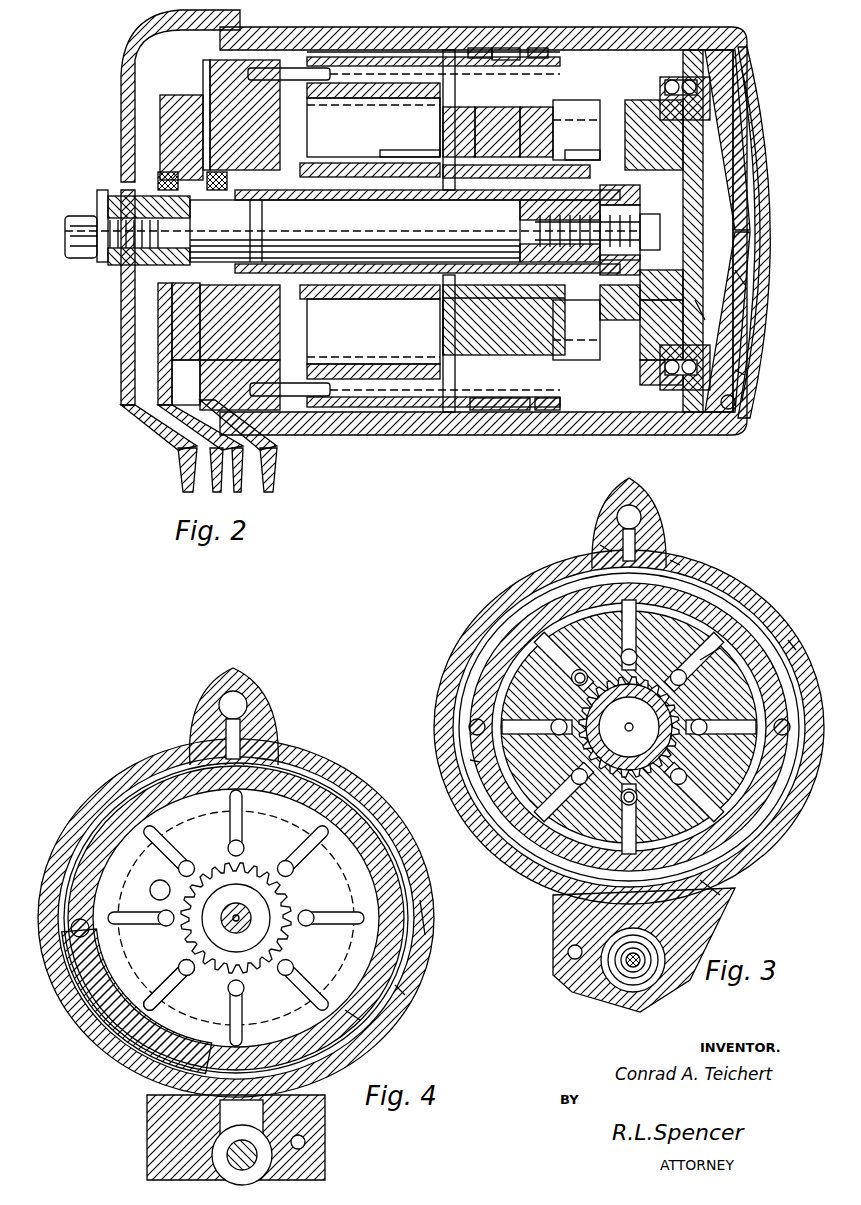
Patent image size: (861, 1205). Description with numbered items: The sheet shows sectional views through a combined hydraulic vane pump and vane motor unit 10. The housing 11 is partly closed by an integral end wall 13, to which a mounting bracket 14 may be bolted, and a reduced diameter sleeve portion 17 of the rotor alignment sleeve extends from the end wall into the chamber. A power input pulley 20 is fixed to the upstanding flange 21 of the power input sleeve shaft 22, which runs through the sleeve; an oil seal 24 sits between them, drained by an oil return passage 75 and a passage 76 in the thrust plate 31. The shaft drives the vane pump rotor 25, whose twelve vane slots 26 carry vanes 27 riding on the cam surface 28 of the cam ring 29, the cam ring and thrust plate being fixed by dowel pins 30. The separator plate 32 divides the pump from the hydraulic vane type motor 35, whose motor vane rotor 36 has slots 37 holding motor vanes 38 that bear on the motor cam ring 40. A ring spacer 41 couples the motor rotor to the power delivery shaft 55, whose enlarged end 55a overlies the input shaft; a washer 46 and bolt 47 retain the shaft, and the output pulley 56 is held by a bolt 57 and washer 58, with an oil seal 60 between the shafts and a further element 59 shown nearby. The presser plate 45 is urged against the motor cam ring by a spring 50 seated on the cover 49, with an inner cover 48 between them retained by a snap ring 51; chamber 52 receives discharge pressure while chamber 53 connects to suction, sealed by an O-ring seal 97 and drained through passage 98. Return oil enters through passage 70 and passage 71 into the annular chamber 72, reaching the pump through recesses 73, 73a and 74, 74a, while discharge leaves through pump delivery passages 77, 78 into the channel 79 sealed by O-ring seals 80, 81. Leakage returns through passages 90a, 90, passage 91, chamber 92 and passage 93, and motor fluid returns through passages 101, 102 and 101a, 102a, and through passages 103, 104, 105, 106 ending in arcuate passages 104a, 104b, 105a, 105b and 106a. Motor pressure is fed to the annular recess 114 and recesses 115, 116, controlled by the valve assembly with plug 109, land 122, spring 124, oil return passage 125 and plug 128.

In FIG. 3, the housing 10 is at (748, 562).
In FIG. 4, the housing 10 is at (295, 722).
In FIG. 3, the housing 11 is at (768, 602).
In FIG. 2, the end wall 13 is at (205, 115).
In FIG. 2, the mounting bracket 14 is at (292, 445).
In FIG. 2, the reduced diameter sleeve portion 17 is at (358, 108).
In FIG. 2, the power input pulley 20 is at (274, 490).
In FIG. 2, the upstanding flange 21 is at (200, 375).
In FIG. 2, the power input sleeve shaft 22 is at (390, 157).
In FIG. 3, the power input sleeve shaft 22 is at (625, 805).
In FIG. 2, the oil seal 24 is at (250, 300).
In FIG. 2, the vane pump rotor 25 is at (436, 100).
In FIG. 3, the vane pump rotor 25 is at (708, 655).
In FIG. 3, the vane slots 26 is at (575, 680).
In FIG. 3, the vane 27 is at (605, 635).
In FIG. 3, the cam surface 28 is at (470, 722).
In FIG. 2, the cam ring 29 is at (350, 57).
In FIG. 3, the cam ring 29 is at (520, 640).
In FIG. 2, the dowel pins 30 is at (300, 396).
In FIG. 3, the dowel pins 30 is at (778, 736).
In FIG. 2, the thrust plate 31 is at (335, 98).
In FIG. 2, the separator plate 32 is at (430, 330).
In FIG. 2, the hydraulic vane type motor 35 is at (560, 57).
In FIG. 3, the hydraulic vane type motor 35 is at (520, 592).
In FIG. 4, the hydraulic vane type motor 35 is at (108, 800).
In FIG. 2, the motor vane rotor 36 is at (615, 312).
In FIG. 4, the motor vane rotor 36 is at (295, 825).
In FIG. 4, the slots 37 is at (150, 890).
In FIG. 4, the motor vane 38 is at (180, 980).
In FIG. 2, the motor cam ring 40 is at (600, 426).
In FIG. 4, the motor cam ring 40 is at (430, 935).
In FIG. 2, the ring spacer 41 is at (588, 150).
In FIG. 4, the ring spacer 41 is at (250, 865).
In FIG. 2, the presser plate 45 is at (625, 325).
In FIG. 2, the washer 46 is at (622, 198).
In FIG. 4, the washer 46 is at (268, 922).
In FIG. 2, the bolt 47 is at (640, 215).
In FIG. 4, the bolt 47 is at (188, 860).
In FIG. 2, the inner end plate or cover 48 is at (768, 203).
In FIG. 2, the cover 49 is at (755, 170).
In FIG. 2, the spring 50 is at (748, 372).
In FIG. 2, the snap ring 51 is at (720, 410).
In FIG. 2, the chamber 52 is at (748, 280).
In FIG. 2, the chamber 53 is at (766, 236).
In FIG. 2, the power delivery shaft 55 is at (350, 300).
In FIG. 2, the enlarged end 55a is at (158, 300).
In FIG. 2, the pulley 56 is at (165, 30).
In FIG. 2, the bolt 57 is at (75, 218).
In FIG. 2, the washer 58 is at (100, 195).
In FIG. 4, the recess 59 is at (355, 1015).
In FIG. 2, the oil seal 60 is at (164, 172).
In FIG. 3, the passage 70 is at (615, 515).
In FIG. 4, the passage 70 is at (262, 678).
In FIG. 3, the passage 71 is at (640, 510).
In FIG. 4, the passage 71 is at (220, 700).
In FIG. 2, the annular chamber 72 is at (395, 412).
In FIG. 3, the annular chamber 72 is at (680, 560).
In FIG. 2, the arcuate shaped recess 73 is at (268, 118).
In FIG. 2, the arcuate shaped recess 73a is at (340, 364).
In FIG. 2, the arcuate shaped recess 74 is at (448, 50).
In FIG. 3, the arcuate shaped recess 74 is at (470, 760).
In FIG. 2, the arcuate shaped recess 74a is at (452, 412).
In FIG. 3, the arcuate shaped recess 74a is at (792, 642).
In FIG. 2, the oil return passage 75 is at (258, 205).
In FIG. 2, the passage 76 is at (340, 120).
In FIG. 3, the pump delivery passage 77 is at (662, 540).
In FIG. 4, the pump delivery passage 77 is at (200, 765).
In FIG. 3, the pump delivery passage 78 is at (722, 895).
In FIG. 4, the pump delivery passage 78 is at (280, 1085).
In FIG. 2, the annular high pressure pump discharge channel 79 is at (505, 48).
In FIG. 2, the O-ring seal 80 is at (480, 48).
In FIG. 2, the O-ring seal 81 is at (540, 48).
In FIG. 2, the passage 90 is at (350, 228).
In FIG. 3, the passage 90 is at (629, 731).
In FIG. 2, the passage 90a is at (210, 205).
In FIG. 2, the passage 91 is at (615, 258).
In FIG. 4, the passage 91 is at (278, 958).
In FIG. 2, the chamber 92 is at (660, 285).
In FIG. 2, the passage 93 is at (690, 165).
In FIG. 2, the O-ring seal 97 is at (692, 310).
In FIG. 3, the passage 98 is at (605, 545).
In FIG. 2, the passage 101 is at (635, 120).
In FIG. 2, the pressure discharge passage 101a is at (665, 77).
In FIG. 2, the passage 102 is at (668, 395).
In FIG. 2, the pressure discharge passage 102a is at (661, 351).
In FIG. 2, the passage 103 is at (503, 132).
In FIG. 2, the passage 104 is at (541, 132).
In FIG. 2, the arcuate shaped passage 104a is at (516, 173).
In FIG. 2, the arcuate shaped passage 104b is at (471, 132).
In FIG. 2, the passage 105 is at (504, 320).
In FIG. 2, the arcuate shaped passage 105a is at (584, 230).
In FIG. 2, the arcuate shaped passage 105b is at (443, 322).
In FIG. 2, the passage 106 is at (505, 412).
In FIG. 2, the arcuate shaped passage 106a is at (545, 412).
In FIG. 4, the plug 109 is at (228, 1158).
In FIG. 4, the annular recess 114 is at (400, 990).
In FIG. 4, the arcuate shaped recess 115 is at (305, 760).
In FIG. 4, the arcuate shaped recess 116 is at (130, 1070).
In FIG. 3, the land 122 is at (650, 975).
In FIG. 3, the spring 124 is at (573, 960).
In FIG. 3, the oil return passage 125 is at (700, 945).
In FIG. 3, the plug 128 is at (612, 985).